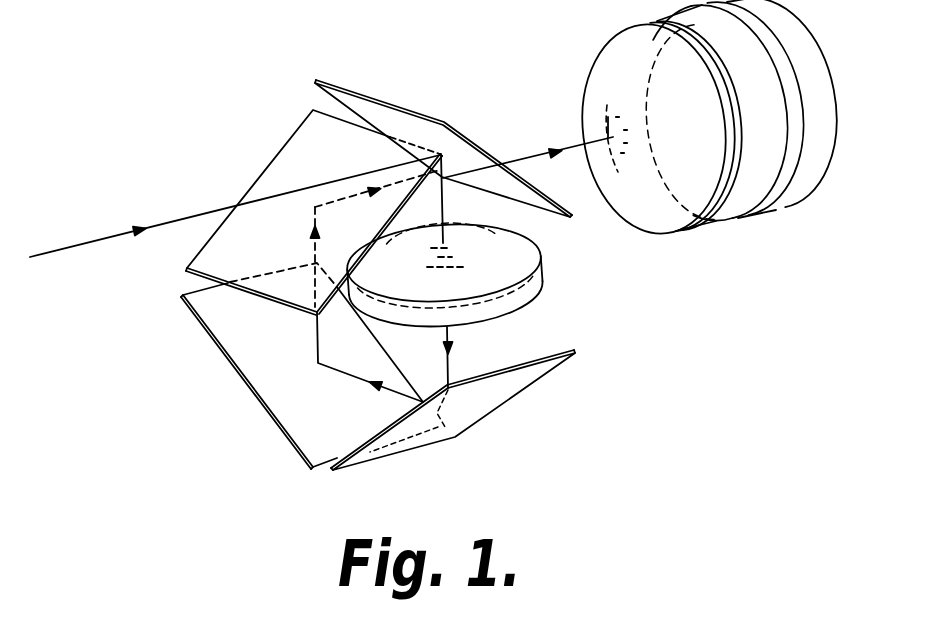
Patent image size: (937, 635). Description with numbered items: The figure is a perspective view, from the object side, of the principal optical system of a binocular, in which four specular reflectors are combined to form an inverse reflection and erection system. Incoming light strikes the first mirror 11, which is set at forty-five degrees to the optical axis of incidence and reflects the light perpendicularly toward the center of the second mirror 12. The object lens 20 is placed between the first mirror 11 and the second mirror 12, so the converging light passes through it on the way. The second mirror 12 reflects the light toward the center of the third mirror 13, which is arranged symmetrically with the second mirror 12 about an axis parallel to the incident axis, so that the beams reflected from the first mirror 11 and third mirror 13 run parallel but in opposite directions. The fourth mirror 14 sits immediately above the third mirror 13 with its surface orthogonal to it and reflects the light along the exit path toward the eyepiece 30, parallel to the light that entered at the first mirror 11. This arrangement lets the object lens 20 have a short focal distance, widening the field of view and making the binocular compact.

The first mirror 11 is at (453, 152).
The second mirror 12 is at (490, 400).
The third mirror 13 is at (273, 367).
The fourth mirror 14 is at (287, 165).
The object lens 20 is at (517, 265).
The eyepiece 30 is at (797, 223).